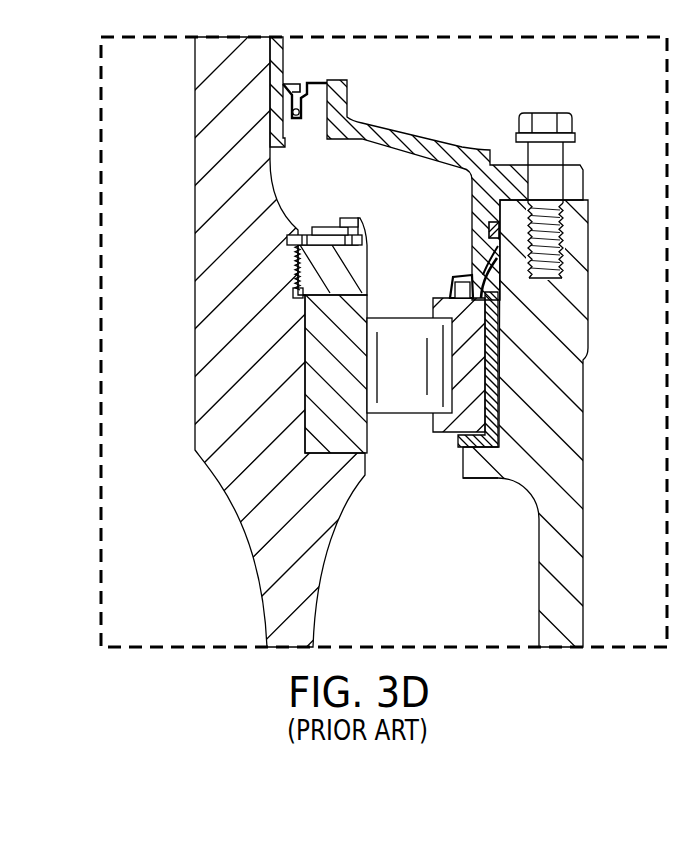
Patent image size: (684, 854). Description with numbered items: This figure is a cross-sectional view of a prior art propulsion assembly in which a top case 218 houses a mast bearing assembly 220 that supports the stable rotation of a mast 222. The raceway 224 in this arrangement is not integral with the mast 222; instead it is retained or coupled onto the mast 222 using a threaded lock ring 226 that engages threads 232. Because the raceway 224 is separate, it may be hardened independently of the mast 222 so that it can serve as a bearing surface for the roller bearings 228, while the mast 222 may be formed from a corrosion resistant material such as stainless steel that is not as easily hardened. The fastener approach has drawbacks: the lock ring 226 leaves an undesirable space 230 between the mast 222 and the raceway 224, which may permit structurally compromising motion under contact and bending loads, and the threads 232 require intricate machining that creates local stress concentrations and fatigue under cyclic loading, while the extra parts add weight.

The top case 218 is at (572, 580).
The mast bearing assembly 220 is at (453, 470).
The mast 222 is at (268, 571).
The raceway 224 is at (313, 395).
The threaded lock ring 226 is at (357, 262).
The roller bearings 228 is at (400, 418).
The space 230 is at (300, 310).
The threads 232 is at (296, 262).